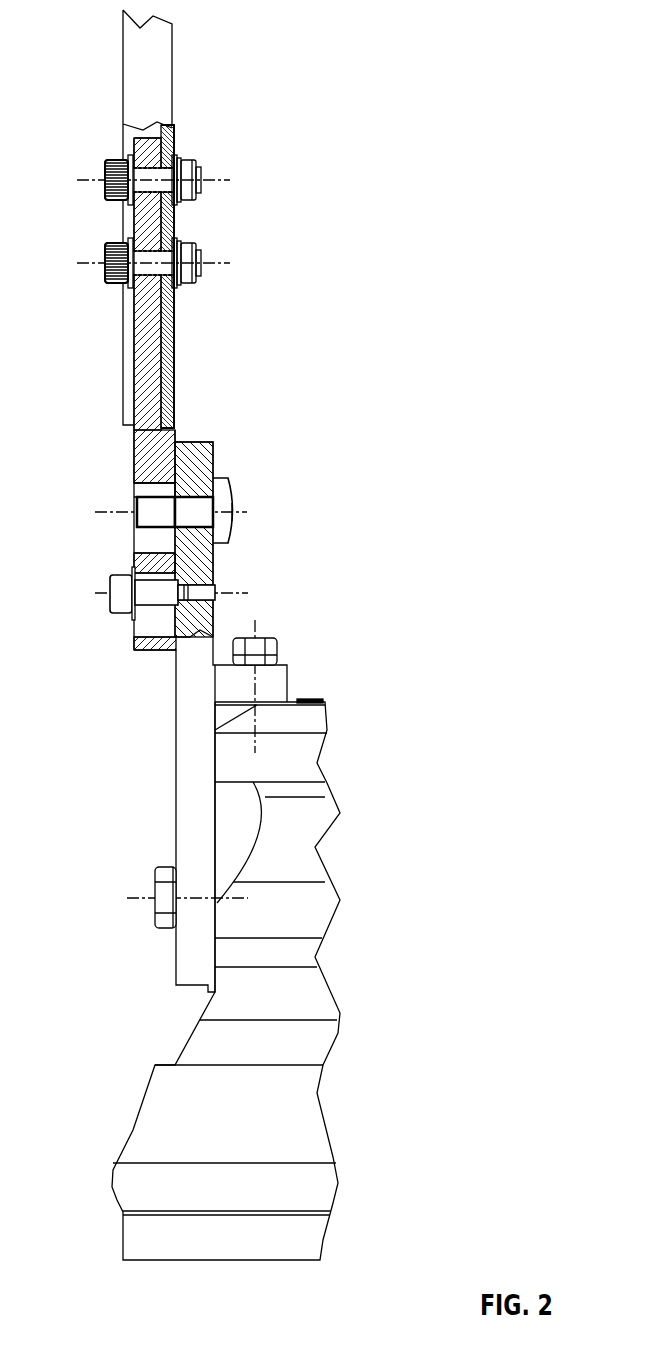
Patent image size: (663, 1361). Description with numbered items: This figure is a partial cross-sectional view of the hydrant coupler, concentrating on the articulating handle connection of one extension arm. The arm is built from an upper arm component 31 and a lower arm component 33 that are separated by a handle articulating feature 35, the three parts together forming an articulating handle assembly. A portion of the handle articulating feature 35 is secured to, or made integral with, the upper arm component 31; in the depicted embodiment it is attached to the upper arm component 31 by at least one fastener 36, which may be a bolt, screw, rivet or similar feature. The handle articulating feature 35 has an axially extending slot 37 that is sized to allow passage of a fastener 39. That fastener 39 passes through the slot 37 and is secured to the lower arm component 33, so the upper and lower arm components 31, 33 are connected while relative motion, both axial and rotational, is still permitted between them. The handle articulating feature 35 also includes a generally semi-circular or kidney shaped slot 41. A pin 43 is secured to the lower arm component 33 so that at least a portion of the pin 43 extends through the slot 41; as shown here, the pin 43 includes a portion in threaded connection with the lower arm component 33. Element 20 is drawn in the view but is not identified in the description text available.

The body 20 is at (145, 1127).
The upper arm component 31 is at (140, 466).
The lower arm component 33 is at (185, 962).
The handle articulating feature 35 is at (126, 513).
The fastener 36 is at (104, 176).
The axially extending slot 37 is at (140, 630).
The fastener 39 is at (108, 582).
The slot 41 is at (136, 488).
The pin 43 is at (219, 478).